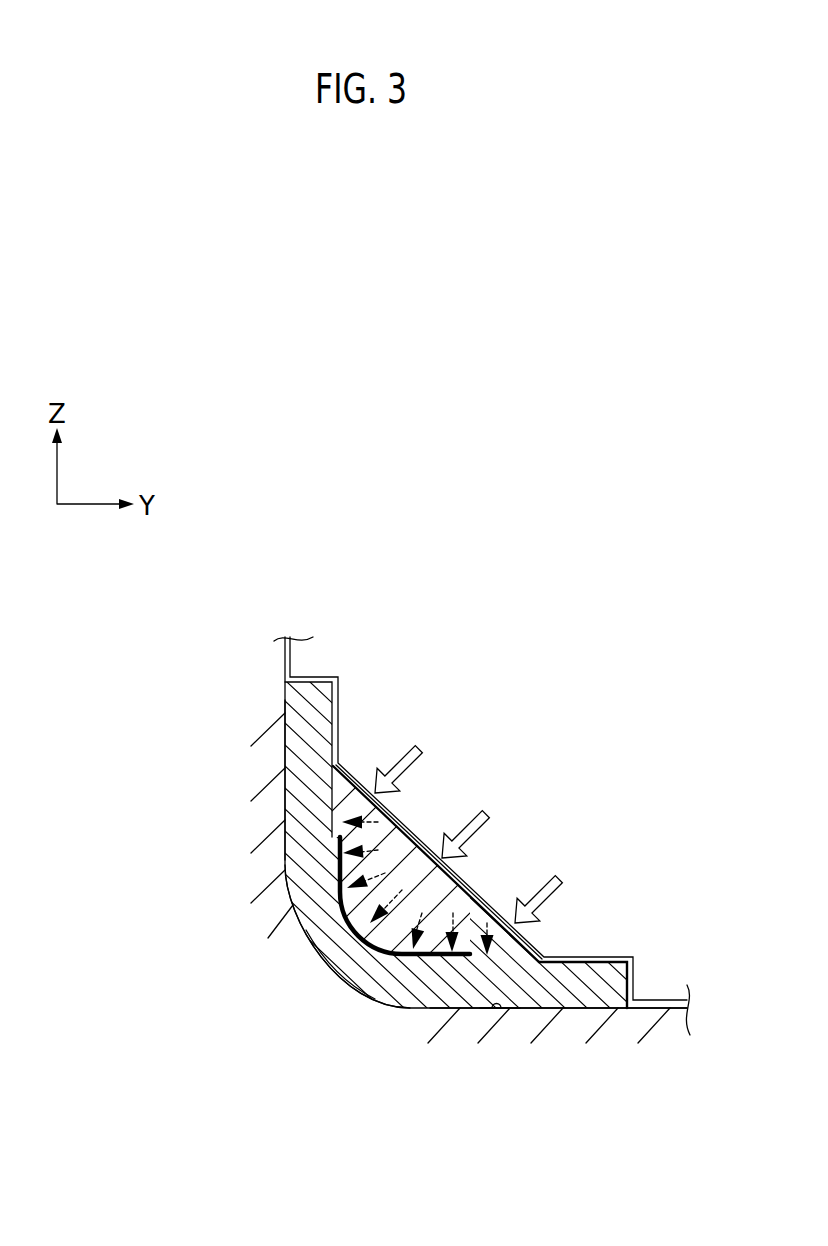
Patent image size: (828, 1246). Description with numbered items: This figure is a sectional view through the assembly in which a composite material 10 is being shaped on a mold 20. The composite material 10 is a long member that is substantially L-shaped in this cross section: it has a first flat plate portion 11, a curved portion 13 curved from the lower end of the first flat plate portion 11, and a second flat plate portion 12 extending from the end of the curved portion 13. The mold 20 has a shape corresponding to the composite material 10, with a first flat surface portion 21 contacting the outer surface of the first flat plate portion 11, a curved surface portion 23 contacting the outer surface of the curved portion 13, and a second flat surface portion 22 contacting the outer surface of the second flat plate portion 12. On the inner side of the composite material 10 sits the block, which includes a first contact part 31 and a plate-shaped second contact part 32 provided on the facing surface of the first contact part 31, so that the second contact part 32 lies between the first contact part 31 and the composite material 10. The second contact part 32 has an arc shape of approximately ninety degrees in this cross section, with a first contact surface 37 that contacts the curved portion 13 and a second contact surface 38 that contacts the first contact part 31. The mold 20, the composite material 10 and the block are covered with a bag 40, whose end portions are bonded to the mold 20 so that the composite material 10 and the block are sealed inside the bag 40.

The composite material 10 is at (440, 822).
The first flat plate portion 11 is at (286, 775).
The second flat plate portion 12 is at (584, 1010).
The curved portion 13 is at (338, 962).
The mold 20 is at (487, 1041).
The first flat surface portion 21 is at (286, 713).
The second flat surface portion 22 is at (497, 1012).
The curved surface portion 23 is at (364, 990).
The first contact part 31 is at (420, 840).
The second contact part 32 is at (347, 938).
The first contact surface 37 is at (330, 872).
The second contact surface 38 is at (440, 955).
The bag 40 is at (324, 674).